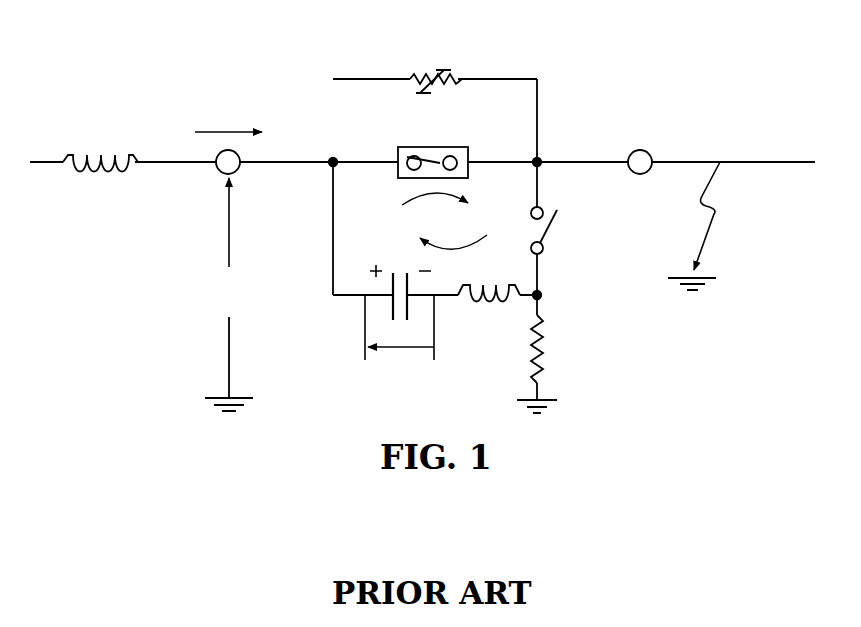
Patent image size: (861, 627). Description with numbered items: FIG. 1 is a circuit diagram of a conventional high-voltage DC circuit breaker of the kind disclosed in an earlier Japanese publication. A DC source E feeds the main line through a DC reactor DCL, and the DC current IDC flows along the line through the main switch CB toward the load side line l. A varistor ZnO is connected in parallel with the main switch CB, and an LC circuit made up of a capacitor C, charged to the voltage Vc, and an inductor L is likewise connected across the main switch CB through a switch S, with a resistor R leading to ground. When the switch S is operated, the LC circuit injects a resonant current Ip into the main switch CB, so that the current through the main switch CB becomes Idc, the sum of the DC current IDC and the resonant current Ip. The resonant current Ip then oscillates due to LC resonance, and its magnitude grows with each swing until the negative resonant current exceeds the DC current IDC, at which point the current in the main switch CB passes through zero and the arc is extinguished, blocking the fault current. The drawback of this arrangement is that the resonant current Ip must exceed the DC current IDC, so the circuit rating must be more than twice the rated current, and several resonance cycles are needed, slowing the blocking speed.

The DC reactor DCL is at (100, 144).
The DC current IDC is at (228, 118).
The zinc oxide arrester ZnO is at (434, 63).
The main switch CB is at (433, 142).
The total current through main switch Idc is at (435, 208).
The resonant current Ip is at (453, 240).
The switch S is at (558, 230).
The capacitor C is at (400, 281).
The capacitor voltage Vc is at (399, 344).
The inductor L is at (489, 275).
The resistor R is at (548, 364).
The DC voltage source E is at (229, 294).
The transmission line / fault l is at (697, 207).